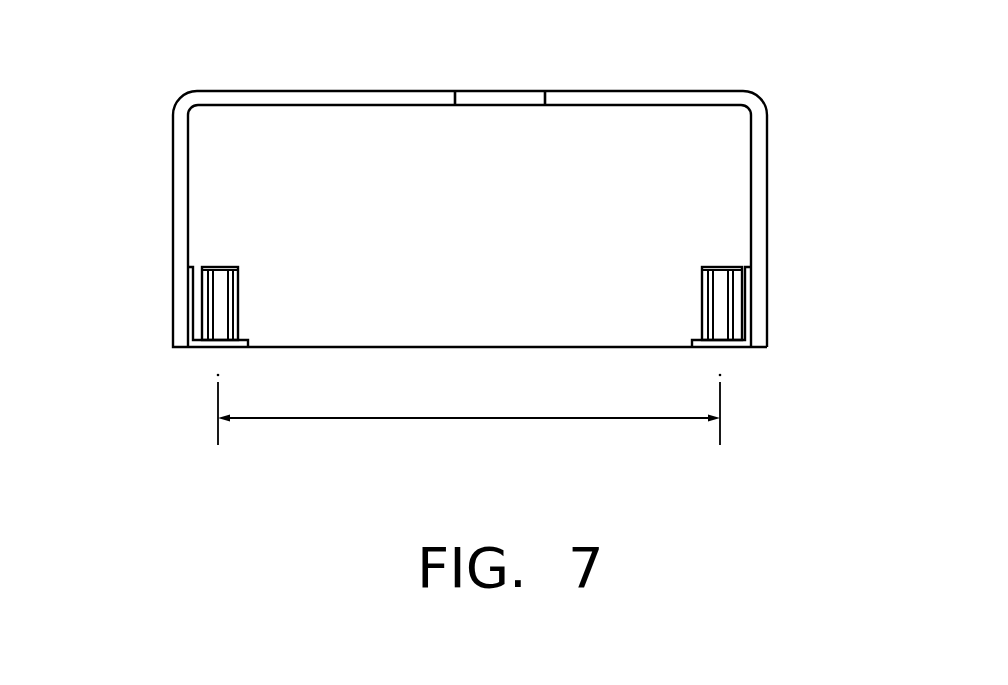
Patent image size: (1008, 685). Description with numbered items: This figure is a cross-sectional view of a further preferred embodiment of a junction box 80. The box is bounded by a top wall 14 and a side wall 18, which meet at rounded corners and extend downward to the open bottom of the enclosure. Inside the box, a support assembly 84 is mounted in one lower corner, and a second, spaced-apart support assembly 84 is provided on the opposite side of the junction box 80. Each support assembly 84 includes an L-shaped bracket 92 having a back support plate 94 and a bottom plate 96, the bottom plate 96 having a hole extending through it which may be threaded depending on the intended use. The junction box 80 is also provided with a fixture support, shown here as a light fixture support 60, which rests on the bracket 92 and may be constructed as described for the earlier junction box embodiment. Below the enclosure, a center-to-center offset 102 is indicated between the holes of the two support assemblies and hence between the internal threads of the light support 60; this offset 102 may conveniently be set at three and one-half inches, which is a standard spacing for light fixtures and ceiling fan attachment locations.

The top wall 14 is at (273, 89).
The side wall 18 is at (768, 133).
The light fixture support 60 is at (690, 283).
The junction box 80 is at (155, 235).
The support assembly 84 is at (252, 289).
The L-shaped bracket 92 is at (745, 290).
The back support plate 94 is at (767, 312).
The bottom plate 96 is at (751, 350).
The center-to-center offset 102 is at (445, 427).